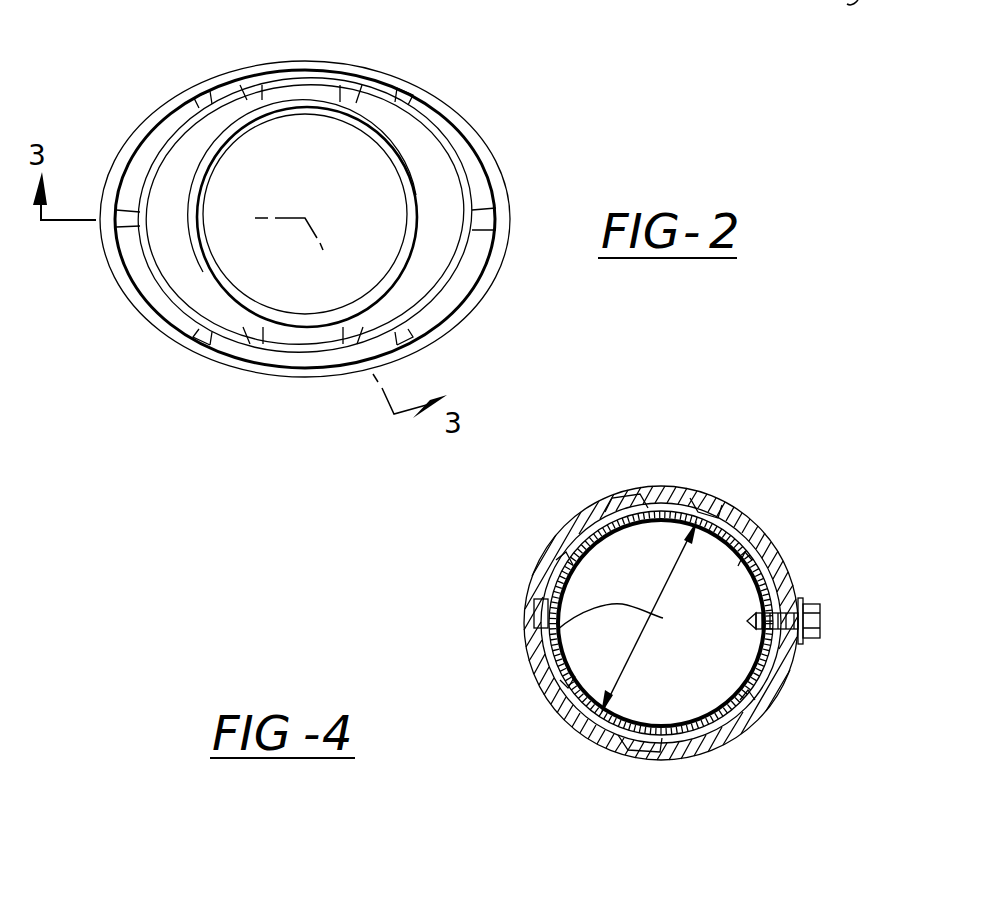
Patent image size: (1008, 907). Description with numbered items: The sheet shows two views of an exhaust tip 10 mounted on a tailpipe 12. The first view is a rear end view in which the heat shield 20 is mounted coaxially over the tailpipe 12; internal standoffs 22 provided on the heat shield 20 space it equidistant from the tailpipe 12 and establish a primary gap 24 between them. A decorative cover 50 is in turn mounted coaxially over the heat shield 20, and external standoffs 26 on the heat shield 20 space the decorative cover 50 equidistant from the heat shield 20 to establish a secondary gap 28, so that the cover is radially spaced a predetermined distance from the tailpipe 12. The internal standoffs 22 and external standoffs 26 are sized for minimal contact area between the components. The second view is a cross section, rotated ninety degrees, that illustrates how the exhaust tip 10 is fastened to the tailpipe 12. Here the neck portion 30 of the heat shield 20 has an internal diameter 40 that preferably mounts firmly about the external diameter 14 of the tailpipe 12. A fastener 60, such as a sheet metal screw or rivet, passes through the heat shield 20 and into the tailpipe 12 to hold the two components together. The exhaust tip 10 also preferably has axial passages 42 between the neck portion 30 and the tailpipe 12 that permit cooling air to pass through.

In FIG. 2, the exhaust tip 10 is at (580, 186).
In FIG. 4, the exhaust tip 10 is at (480, 570).
In FIG. 2, the tailpipe 12 is at (397, 165).
In FIG. 4, the tailpipe 12 is at (697, 520).
In FIG. 4, the external diameter 14 is at (773, 543).
In FIG. 2, the heat shield 20 is at (183, 127).
In FIG. 4, the heat shield 20 is at (798, 696).
In FIG. 2, the internal standoffs 22 is at (350, 100).
In FIG. 2, the primary gap 24 is at (438, 180).
In FIG. 2, the external standoffs 26 is at (200, 97).
In FIG. 2, the secondary gap 28 is at (128, 173).
In FIG. 4, the neck portion 30 is at (703, 503).
In FIG. 4, the internal diameter 40 is at (545, 625).
In FIG. 4, the axial passages 42 is at (623, 500).
In FIG. 2, the decorative cover 50 is at (138, 138).
In FIG. 4, the fastener 60 is at (822, 621).